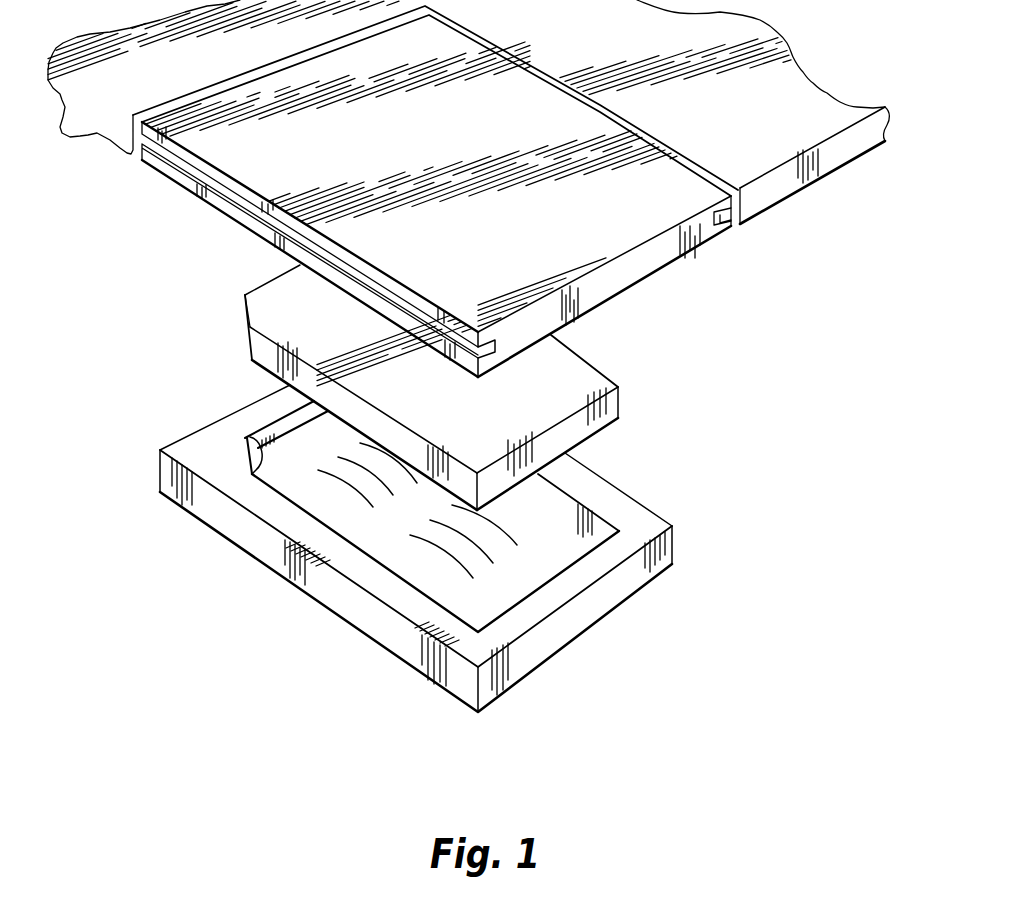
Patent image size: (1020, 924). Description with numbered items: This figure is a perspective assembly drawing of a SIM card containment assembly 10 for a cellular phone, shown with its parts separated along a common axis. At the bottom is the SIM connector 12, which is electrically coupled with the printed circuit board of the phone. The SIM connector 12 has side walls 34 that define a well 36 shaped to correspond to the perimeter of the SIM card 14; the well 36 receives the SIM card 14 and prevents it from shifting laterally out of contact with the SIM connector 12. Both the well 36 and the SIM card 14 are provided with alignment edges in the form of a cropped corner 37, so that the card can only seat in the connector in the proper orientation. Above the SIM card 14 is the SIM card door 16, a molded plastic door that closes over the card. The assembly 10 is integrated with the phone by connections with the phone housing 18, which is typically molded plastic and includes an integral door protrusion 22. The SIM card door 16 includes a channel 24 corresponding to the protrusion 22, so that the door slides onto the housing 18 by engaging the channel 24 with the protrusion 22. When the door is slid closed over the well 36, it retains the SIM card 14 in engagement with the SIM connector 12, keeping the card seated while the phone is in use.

The SIM card containment assembly 10 is at (86, 174).
The SIM connector 12 is at (618, 500).
The SIM card 14 is at (598, 378).
The SIM card door 16 is at (653, 260).
The phone housing 18 is at (838, 155).
The door protrusion 22 is at (735, 225).
The channel 24 is at (497, 343).
The side walls 34 is at (258, 414).
The well 36 is at (409, 529).
The cropped corner 37 is at (246, 315).